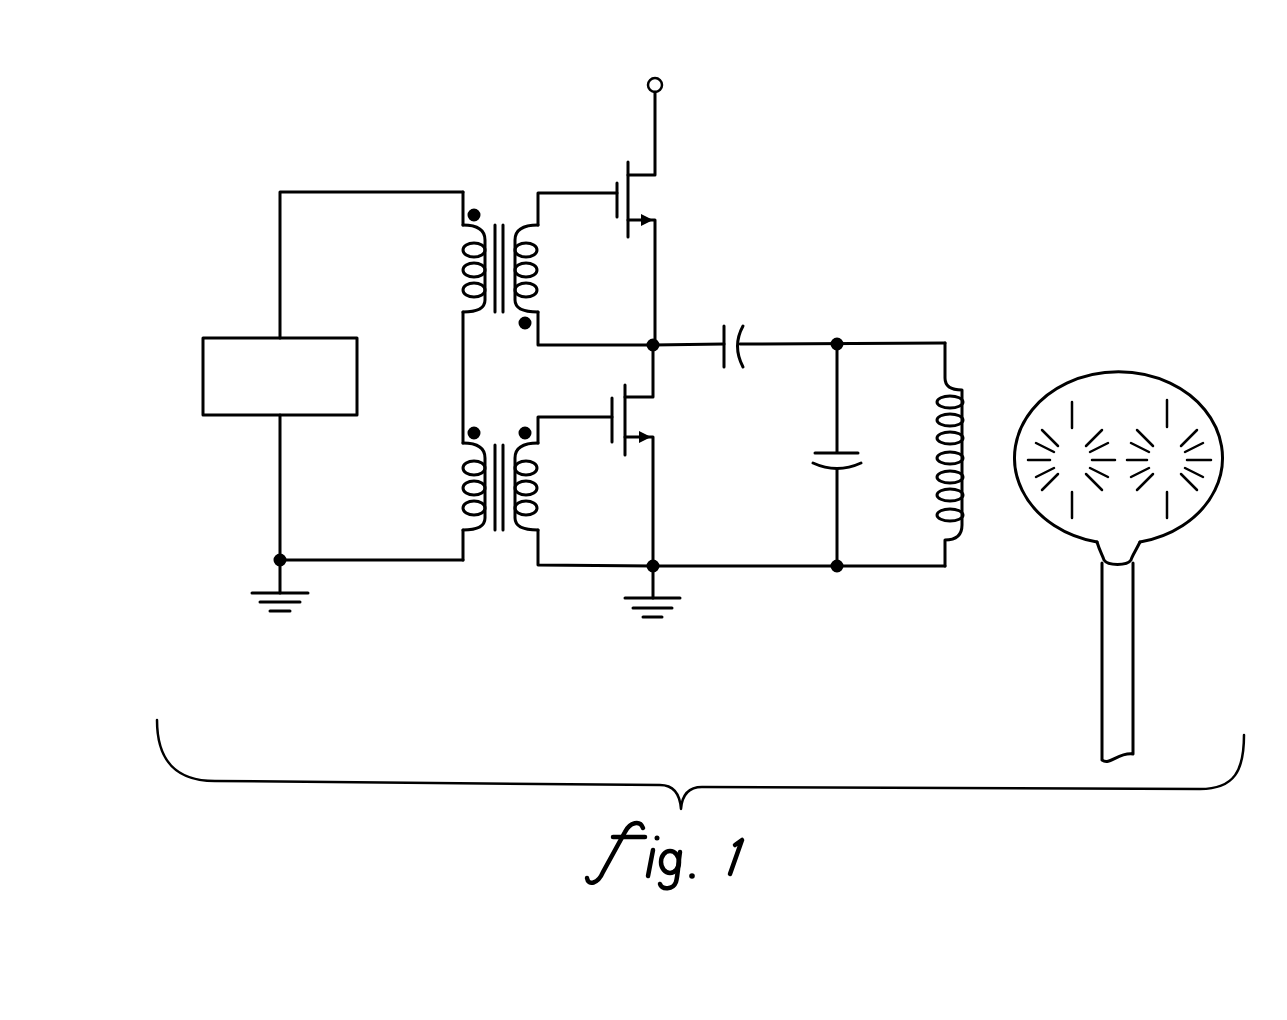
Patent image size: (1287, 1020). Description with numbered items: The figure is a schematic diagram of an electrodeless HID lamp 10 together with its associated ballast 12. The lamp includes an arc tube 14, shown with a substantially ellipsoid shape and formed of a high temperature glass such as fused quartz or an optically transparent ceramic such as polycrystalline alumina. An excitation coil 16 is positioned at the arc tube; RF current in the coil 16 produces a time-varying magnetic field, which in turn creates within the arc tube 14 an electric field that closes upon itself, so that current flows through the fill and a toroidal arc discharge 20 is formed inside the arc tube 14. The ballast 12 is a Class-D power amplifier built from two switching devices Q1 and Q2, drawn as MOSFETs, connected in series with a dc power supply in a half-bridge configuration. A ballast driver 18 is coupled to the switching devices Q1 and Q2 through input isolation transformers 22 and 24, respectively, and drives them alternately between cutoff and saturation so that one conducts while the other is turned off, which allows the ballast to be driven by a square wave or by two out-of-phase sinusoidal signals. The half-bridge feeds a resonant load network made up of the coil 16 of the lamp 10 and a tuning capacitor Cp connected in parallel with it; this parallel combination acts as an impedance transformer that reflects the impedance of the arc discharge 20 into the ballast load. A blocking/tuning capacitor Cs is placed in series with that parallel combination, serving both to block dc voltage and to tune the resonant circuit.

The electrodeless HID lamp 10 is at (1062, 285).
The ballast 12 is at (244, 196).
The arc tube 14 is at (1197, 518).
The excitation coil 16 is at (960, 382).
The ballast driver 18 is at (229, 418).
The toroidal arc discharge 20 is at (1082, 438).
The input isolation transformer 22 is at (505, 226).
The input isolation transformer 24 is at (490, 532).
The switching device Q1 is at (615, 190).
The switching device Q2 is at (622, 452).
The blocking/tuning capacitor Cs is at (723, 330).
The tuning capacitor Cp is at (874, 463).